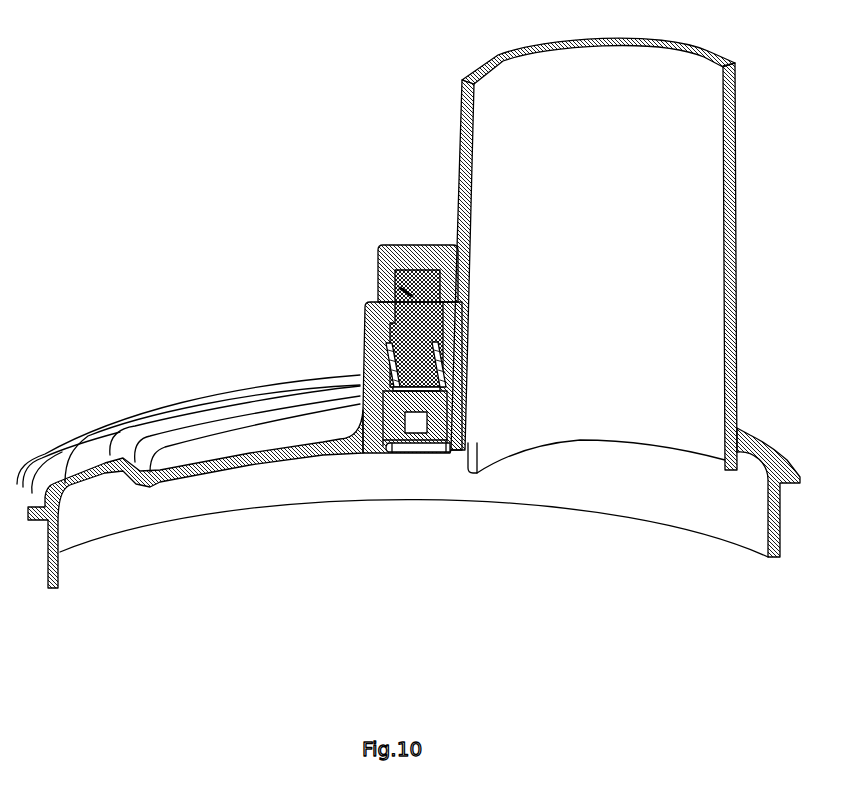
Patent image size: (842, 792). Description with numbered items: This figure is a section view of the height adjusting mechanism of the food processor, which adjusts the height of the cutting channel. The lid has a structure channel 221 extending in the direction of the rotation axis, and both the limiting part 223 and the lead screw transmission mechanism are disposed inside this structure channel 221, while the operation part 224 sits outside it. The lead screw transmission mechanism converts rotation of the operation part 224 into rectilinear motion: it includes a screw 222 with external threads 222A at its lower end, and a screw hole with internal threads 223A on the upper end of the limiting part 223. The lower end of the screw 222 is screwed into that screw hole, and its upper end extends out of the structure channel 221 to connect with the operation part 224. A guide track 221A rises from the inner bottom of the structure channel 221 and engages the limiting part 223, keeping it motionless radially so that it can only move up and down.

The structure channel 221 is at (467, 387).
The guide track 221A is at (448, 451).
The screw 222 is at (380, 284).
The external threads 222A is at (367, 335).
The limiting part 223 is at (363, 387).
The internal threads 223A is at (367, 363).
The operation part 224 is at (400, 240).